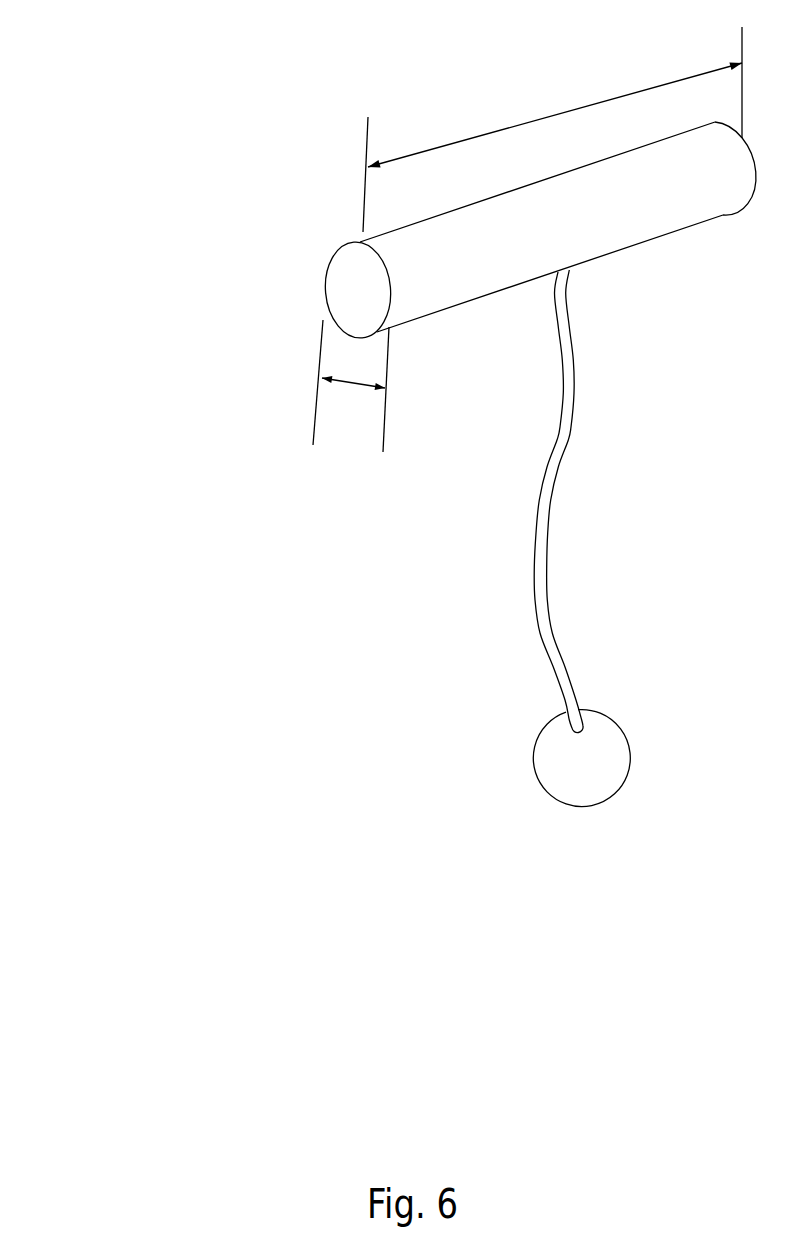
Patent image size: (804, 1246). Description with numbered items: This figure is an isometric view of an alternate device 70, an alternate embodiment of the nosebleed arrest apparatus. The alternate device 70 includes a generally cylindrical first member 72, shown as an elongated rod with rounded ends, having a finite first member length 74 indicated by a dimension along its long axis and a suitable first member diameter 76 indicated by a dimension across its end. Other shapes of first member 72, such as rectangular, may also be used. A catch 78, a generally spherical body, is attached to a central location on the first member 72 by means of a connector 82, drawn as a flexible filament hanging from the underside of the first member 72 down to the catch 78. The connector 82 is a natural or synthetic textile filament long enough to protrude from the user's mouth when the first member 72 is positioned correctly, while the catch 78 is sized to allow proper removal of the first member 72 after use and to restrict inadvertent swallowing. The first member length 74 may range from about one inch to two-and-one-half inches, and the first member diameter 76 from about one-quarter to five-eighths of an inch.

The alternate device 70 is at (160, 133).
The first member 72 is at (655, 223).
The first member length 74 is at (580, 108).
The first member diameter 76 is at (347, 388).
The catch 78 is at (605, 763).
The connector 82 is at (545, 530).